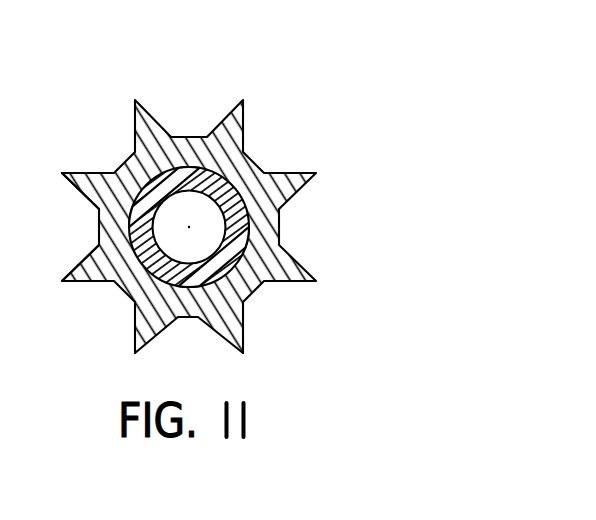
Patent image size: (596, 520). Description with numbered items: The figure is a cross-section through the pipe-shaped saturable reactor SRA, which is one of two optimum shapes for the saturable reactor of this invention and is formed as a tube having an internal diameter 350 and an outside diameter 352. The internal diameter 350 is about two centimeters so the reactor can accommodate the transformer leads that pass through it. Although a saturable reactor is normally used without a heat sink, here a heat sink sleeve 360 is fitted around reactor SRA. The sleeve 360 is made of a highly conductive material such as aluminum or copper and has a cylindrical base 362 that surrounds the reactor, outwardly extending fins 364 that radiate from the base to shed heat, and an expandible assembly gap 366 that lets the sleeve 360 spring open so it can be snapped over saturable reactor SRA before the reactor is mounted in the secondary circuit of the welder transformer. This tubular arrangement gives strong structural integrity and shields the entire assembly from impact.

The heat sink sleeve 360 is at (173, 200).
The outwardly extending fins 364 is at (82, 174).
The cylindrical base 362 is at (112, 228).
The expandible assembly gap 366 is at (190, 308).
The internal diameter 350 is at (213, 226).
The outside diameter 352 is at (150, 276).
The saturable reactor SRA is at (222, 190).